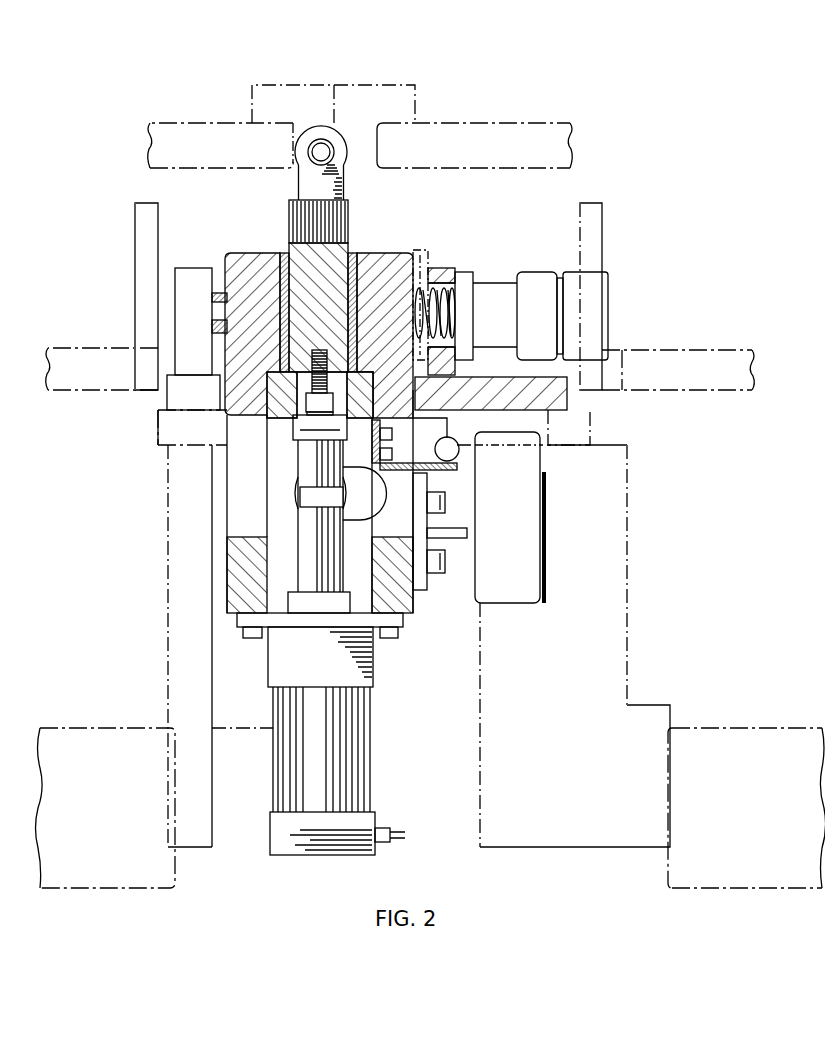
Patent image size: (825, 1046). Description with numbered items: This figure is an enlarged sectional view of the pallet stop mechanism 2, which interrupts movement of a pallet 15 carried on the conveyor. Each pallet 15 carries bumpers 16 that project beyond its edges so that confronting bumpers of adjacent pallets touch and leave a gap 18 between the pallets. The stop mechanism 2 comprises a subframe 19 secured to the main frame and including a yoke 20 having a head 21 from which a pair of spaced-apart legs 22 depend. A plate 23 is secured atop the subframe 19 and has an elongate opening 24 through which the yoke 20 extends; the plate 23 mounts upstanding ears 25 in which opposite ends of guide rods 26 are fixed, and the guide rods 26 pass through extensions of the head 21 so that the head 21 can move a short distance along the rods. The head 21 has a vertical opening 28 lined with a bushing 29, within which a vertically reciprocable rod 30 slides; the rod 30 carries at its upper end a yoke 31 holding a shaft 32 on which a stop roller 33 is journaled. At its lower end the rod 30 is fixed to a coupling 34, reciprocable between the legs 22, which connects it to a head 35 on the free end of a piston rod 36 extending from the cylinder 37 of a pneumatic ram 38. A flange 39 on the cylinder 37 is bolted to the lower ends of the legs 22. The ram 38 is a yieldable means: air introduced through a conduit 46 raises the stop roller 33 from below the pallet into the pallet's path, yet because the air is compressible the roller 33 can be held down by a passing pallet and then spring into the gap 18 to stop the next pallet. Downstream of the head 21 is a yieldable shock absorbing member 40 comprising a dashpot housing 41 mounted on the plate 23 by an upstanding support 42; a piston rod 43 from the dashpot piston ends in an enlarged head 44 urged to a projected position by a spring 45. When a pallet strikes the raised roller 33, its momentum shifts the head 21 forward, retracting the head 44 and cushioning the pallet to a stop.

The pallet stop mechanism 2 is at (137, 538).
The pallet 15 is at (177, 137).
The bumpers 16 is at (298, 93).
The gap 18 is at (347, 133).
The subframe 19 is at (150, 655).
The yoke 20 is at (403, 243).
The head 21 is at (240, 256).
The legs 22 is at (237, 500).
The plate 23 is at (563, 397).
The elongate opening 24 is at (450, 425).
The ears 25 is at (190, 275).
The guide rods 26 is at (215, 330).
The vertical opening 28 is at (285, 255).
The bushing 29 is at (360, 253).
The rod 30 is at (348, 215).
The yoke 31 is at (305, 182).
The shaft 32 is at (312, 152).
The stop roller 33 is at (347, 150).
The coupling 34 is at (282, 403).
The head 35 is at (307, 432).
The piston rod 36 is at (307, 535).
The cylinder 37 is at (373, 705).
The pneumatic ram 38 is at (377, 757).
The flange 39 is at (285, 622).
The shock absorbing member 40 is at (532, 258).
The dashpot housing 41 is at (501, 320).
The support 42 is at (458, 373).
The piston rod 43 is at (433, 312).
The head 44 is at (423, 265).
The spring 45 is at (450, 330).
The conduit 46 is at (393, 835).